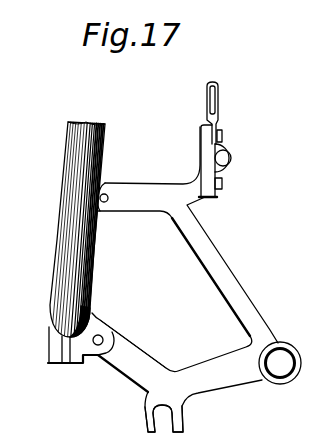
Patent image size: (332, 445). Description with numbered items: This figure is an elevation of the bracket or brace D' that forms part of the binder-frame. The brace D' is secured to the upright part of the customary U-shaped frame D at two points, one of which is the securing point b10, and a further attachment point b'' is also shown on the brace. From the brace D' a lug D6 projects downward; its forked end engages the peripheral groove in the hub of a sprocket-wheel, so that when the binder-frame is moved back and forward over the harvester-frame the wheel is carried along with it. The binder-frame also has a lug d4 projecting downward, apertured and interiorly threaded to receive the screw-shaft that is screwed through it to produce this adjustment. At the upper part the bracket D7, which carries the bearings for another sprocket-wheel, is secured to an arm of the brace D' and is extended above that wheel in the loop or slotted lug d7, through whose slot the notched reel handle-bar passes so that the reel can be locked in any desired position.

The U-shaped frame D is at (58, 229).
The bracket or brace D' is at (174, 279).
The forked lug D6 is at (185, 405).
The bracket D7 is at (233, 179).
The loop or slotted lug d7 is at (220, 93).
The lug d4 is at (50, 364).
The pivot pin b'' is at (113, 179).
The securing point b10 is at (103, 338).